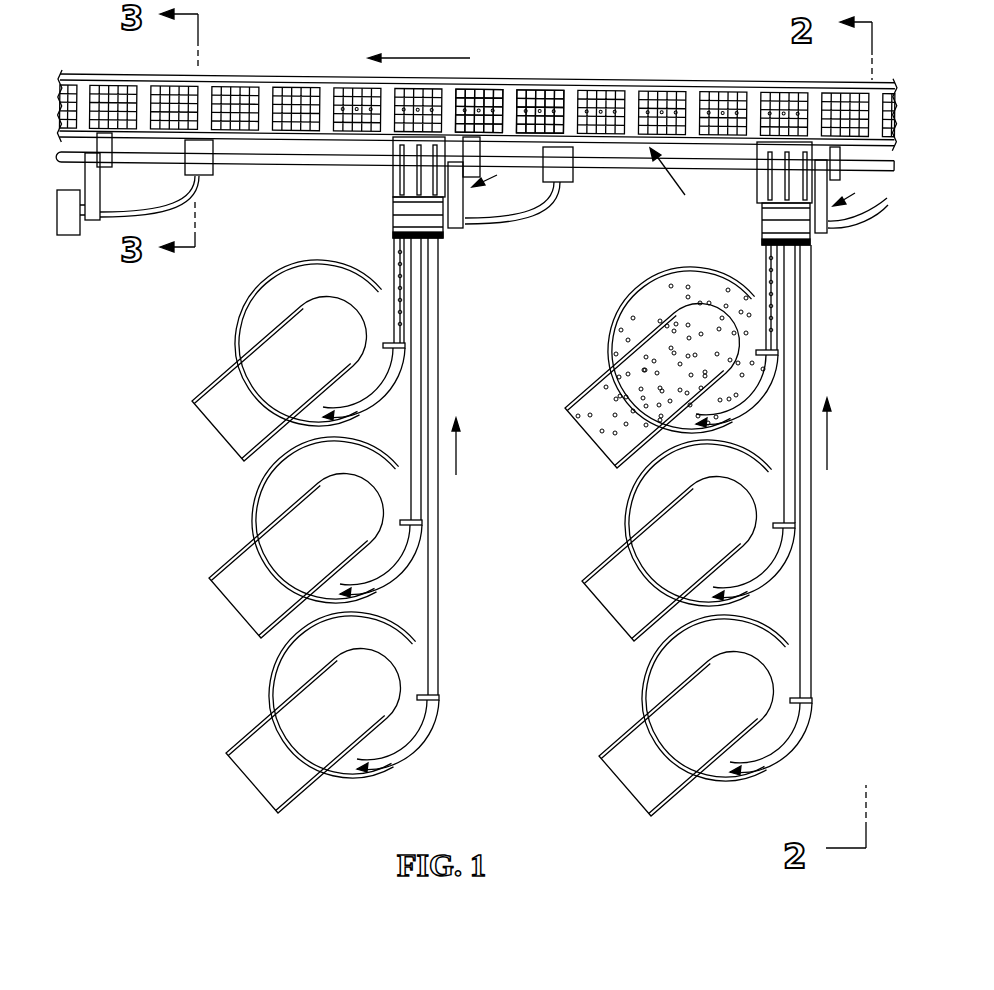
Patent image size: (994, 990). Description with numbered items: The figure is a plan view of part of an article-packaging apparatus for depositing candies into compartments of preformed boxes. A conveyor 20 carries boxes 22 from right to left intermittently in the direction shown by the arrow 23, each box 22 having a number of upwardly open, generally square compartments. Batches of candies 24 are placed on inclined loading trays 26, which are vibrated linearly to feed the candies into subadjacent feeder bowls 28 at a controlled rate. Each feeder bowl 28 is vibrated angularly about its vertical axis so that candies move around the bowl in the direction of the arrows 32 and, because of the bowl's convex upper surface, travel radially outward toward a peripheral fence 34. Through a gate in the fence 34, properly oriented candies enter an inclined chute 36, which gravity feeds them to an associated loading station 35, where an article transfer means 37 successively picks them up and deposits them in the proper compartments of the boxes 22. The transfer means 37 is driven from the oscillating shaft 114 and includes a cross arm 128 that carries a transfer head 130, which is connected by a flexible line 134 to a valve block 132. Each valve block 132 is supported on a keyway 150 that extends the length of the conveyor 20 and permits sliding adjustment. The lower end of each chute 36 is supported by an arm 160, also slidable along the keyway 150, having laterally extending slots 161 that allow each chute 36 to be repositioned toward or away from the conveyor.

The conveyor 20 is at (684, 83).
The boxes 22 is at (643, 87).
The arrow 23 is at (452, 58).
The candies 24 is at (377, 88).
The loading trays 26 is at (234, 367).
The feeder bowls 28 is at (252, 313).
The arrows 32 is at (668, 288).
The peripheral fence 34 is at (610, 323).
The loading station 35 is at (393, 232).
The chute 36 is at (396, 246).
The article transfer means 37 is at (680, 198).
The driven shaft 114 is at (283, 167).
The cross arm 128 is at (465, 193).
The transfer head 130 is at (440, 236).
The valve block 132 is at (205, 176).
The flexible line 134 is at (163, 205).
The keyway 150 is at (679, 180).
The arm 160 is at (393, 200).
The slots 161 is at (434, 172).